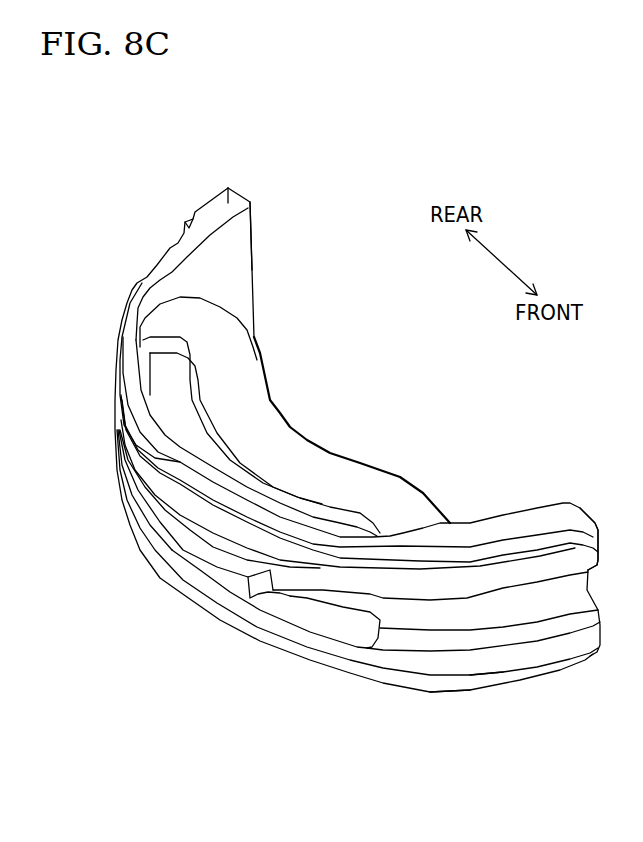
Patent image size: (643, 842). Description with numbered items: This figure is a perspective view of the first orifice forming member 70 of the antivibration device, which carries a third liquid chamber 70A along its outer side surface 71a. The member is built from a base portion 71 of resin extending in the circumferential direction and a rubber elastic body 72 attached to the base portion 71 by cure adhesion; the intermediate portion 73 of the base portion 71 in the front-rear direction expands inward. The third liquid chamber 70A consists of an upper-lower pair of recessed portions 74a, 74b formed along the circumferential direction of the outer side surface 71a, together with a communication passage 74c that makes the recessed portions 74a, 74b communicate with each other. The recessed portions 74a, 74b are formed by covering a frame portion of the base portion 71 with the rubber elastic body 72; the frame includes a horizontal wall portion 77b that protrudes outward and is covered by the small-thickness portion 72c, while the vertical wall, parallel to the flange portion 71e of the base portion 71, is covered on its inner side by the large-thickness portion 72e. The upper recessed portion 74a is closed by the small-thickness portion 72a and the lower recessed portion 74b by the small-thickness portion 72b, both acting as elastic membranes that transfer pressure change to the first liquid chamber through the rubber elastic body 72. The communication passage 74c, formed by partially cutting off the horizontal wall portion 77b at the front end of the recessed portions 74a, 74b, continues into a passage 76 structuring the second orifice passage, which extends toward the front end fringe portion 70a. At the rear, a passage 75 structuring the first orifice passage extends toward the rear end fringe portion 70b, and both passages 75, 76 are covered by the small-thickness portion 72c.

The first orifice forming member 70 is at (345, 183).
The front end fringe portion 70a is at (573, 503).
The rear end fringe portion 70b is at (230, 188).
The third liquid chamber 70A is at (265, 603).
The base portion 71 is at (538, 503).
The outer side surface 71a is at (263, 432).
The flange portion 71e is at (498, 525).
The rubber elastic body 72 is at (382, 462).
The small-thickness portion 72a is at (165, 390).
The small-thickness portion 72b is at (287, 643).
The small-thickness portion 72c is at (160, 513).
The large-thickness portion 72e is at (337, 470).
The intermediate portion 73 is at (297, 348).
The recessed portion 74a is at (143, 485).
The recessed portion 74b is at (170, 553).
The communication passage 74c is at (323, 613).
The passage 75 is at (167, 250).
The passage 76 is at (503, 633).
The horizontal wall portion 77b is at (218, 570).